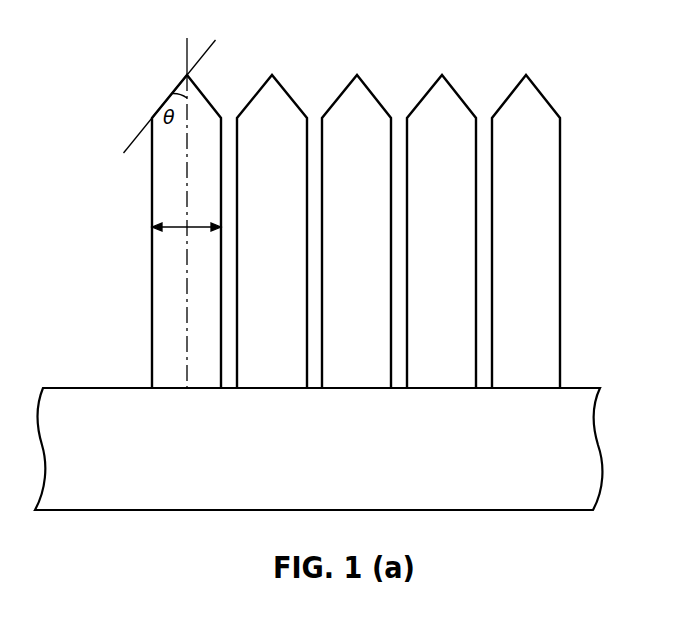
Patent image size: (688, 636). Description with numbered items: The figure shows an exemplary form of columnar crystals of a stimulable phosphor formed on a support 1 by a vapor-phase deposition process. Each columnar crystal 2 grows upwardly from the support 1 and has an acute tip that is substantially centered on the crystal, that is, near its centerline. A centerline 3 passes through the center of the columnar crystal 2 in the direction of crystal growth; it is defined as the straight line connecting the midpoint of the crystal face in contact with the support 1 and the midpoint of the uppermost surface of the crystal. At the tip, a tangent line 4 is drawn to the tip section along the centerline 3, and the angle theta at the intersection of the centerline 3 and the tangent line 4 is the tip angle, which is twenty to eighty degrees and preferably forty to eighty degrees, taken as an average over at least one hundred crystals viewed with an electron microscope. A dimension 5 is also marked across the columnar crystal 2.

The support 1 is at (102, 386).
The columnar crystal 2 is at (151, 193).
The centerline 3 is at (185, 45).
The tangent line 4 is at (208, 52).
The width of protrusion 5 is at (186, 213).